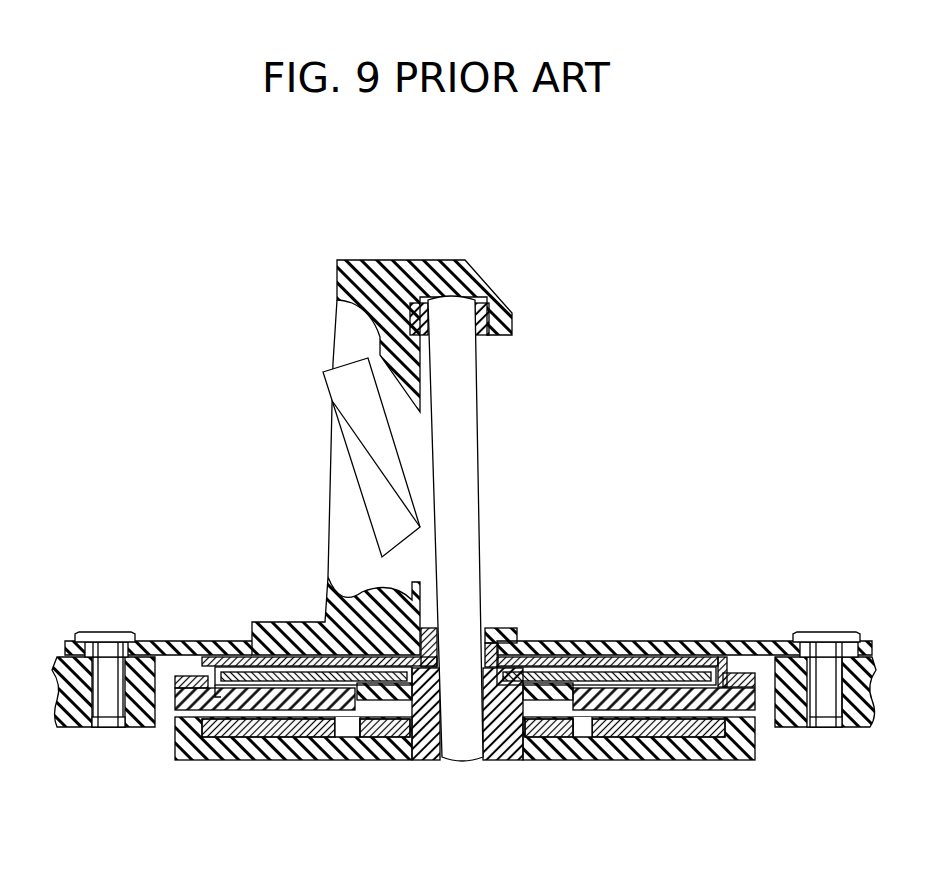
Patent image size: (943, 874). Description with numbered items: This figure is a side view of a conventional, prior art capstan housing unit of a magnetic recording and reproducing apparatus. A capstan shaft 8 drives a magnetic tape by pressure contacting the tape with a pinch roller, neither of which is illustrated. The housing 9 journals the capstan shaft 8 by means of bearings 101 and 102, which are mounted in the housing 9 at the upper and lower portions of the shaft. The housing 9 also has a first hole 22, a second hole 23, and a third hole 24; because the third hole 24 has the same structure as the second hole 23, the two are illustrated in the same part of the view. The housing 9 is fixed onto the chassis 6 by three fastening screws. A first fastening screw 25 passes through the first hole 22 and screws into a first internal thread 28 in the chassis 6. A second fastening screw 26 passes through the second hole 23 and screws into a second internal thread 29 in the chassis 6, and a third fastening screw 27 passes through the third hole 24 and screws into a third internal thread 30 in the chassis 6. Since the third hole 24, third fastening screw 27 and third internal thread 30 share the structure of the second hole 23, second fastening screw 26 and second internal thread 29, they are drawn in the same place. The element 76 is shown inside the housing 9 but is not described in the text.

The chassis 6 is at (130, 717).
The capstan shaft 8 is at (462, 477).
The housing 9 is at (358, 272).
The first hole 22 is at (797, 647).
The second hole 23 is at (178, 636).
The third hole 24 is at (140, 642).
The first fastening screw 25 is at (822, 632).
The second fastening screw 26 is at (113, 590).
The third fastening screw 27 is at (100, 630).
The first internal thread 28 is at (822, 727).
The second internal thread 29 is at (72, 763).
The third internal thread 30 is at (102, 728).
The magnet 76 is at (372, 460).
The bearing 101 is at (485, 333).
The bearing 102 is at (487, 627).